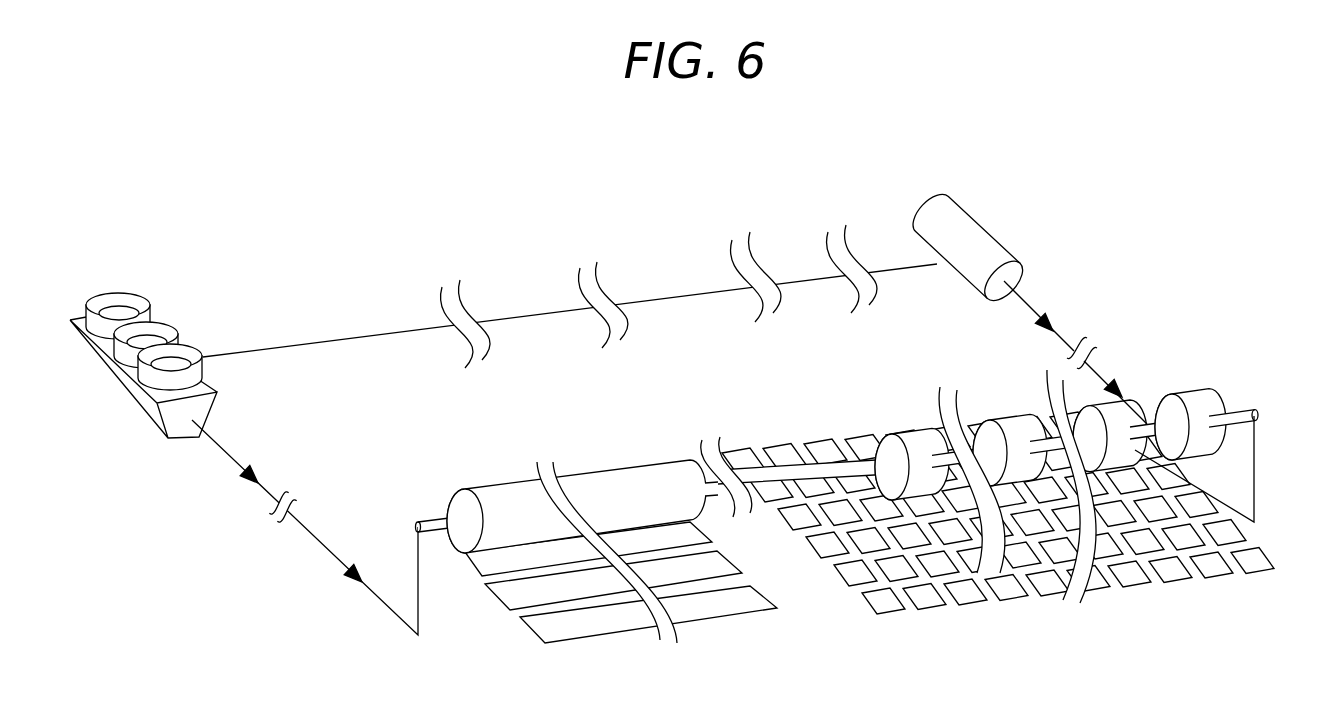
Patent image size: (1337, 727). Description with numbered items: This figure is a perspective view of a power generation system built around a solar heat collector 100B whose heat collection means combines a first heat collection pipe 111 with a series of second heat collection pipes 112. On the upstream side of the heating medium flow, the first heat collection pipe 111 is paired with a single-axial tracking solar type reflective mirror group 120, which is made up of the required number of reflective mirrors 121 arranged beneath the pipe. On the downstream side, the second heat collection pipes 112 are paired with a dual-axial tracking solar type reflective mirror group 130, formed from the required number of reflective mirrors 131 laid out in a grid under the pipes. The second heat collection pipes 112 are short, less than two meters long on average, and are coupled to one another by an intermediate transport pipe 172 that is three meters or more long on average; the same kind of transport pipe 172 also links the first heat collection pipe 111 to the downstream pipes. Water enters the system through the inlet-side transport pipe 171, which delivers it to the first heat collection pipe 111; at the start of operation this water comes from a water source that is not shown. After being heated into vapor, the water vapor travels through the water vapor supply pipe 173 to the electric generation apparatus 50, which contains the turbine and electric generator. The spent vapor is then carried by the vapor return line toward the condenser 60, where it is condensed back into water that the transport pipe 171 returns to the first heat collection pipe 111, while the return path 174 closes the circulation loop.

The electric generation apparatus 50 is at (975, 212).
The condenser 60 is at (130, 390).
The first heat collection pipe 111 is at (630, 468).
The second heat collection pipes 112 is at (903, 430).
The single-axial tracking solar type reflective mirror group 120 is at (575, 650).
The reflective mirrors 121 is at (507, 589).
The dual-axial tracking solar type reflective mirror group 130 is at (986, 610).
The reflective mirrors 131 is at (797, 519).
The inlet-side transport pipe 171 is at (310, 535).
The intermediate transport pipe 172 is at (700, 457).
The water vapor supply pipe 173 is at (1232, 410).
The supply path 174 is at (677, 292).
The solar heat collector 100B is at (828, 628).